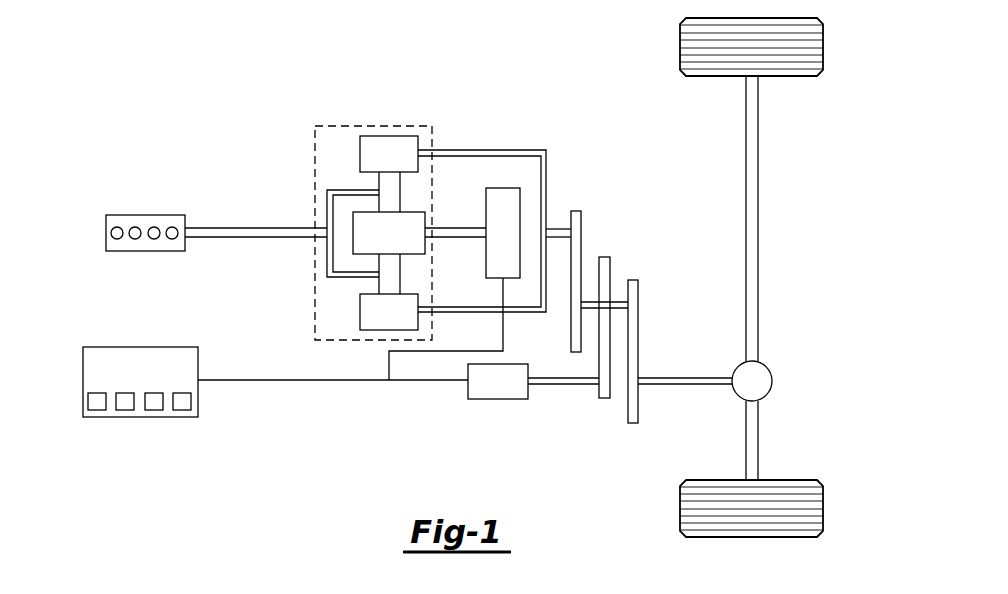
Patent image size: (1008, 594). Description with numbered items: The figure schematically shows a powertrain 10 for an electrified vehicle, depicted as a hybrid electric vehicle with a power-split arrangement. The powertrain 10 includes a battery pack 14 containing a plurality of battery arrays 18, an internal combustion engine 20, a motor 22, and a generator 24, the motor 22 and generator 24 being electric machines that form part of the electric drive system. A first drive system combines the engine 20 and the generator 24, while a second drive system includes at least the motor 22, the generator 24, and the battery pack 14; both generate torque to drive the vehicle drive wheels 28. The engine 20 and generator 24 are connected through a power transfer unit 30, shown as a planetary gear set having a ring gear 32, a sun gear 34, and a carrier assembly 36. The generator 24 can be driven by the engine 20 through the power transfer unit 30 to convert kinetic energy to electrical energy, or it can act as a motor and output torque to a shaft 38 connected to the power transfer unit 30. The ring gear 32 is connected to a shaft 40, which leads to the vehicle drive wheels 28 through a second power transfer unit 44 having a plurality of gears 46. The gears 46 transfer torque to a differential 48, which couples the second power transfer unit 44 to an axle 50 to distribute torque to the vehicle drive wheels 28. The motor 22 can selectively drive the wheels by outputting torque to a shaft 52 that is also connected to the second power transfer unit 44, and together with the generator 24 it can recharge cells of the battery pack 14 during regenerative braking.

The powertrain 10 is at (181, 52).
The battery pack 14 is at (137, 347).
The battery arrays 18 is at (97, 410).
The internal combustion engine 20 is at (110, 215).
The motor 22 is at (497, 399).
The generator 24 is at (520, 200).
The vehicle drive wheels 28 is at (823, 50).
The power transfer unit 30 is at (434, 137).
The ring gear 32 is at (360, 155).
The sun gear 34 is at (415, 254).
The carrier assembly 36 is at (327, 212).
The shaft 38 is at (460, 228).
The shaft 40 is at (557, 240).
The second power transfer unit 44 is at (656, 222).
The gears 46 is at (581, 220).
The differential 48 is at (772, 381).
The axle 50 is at (758, 219).
The shaft 52 is at (563, 386).